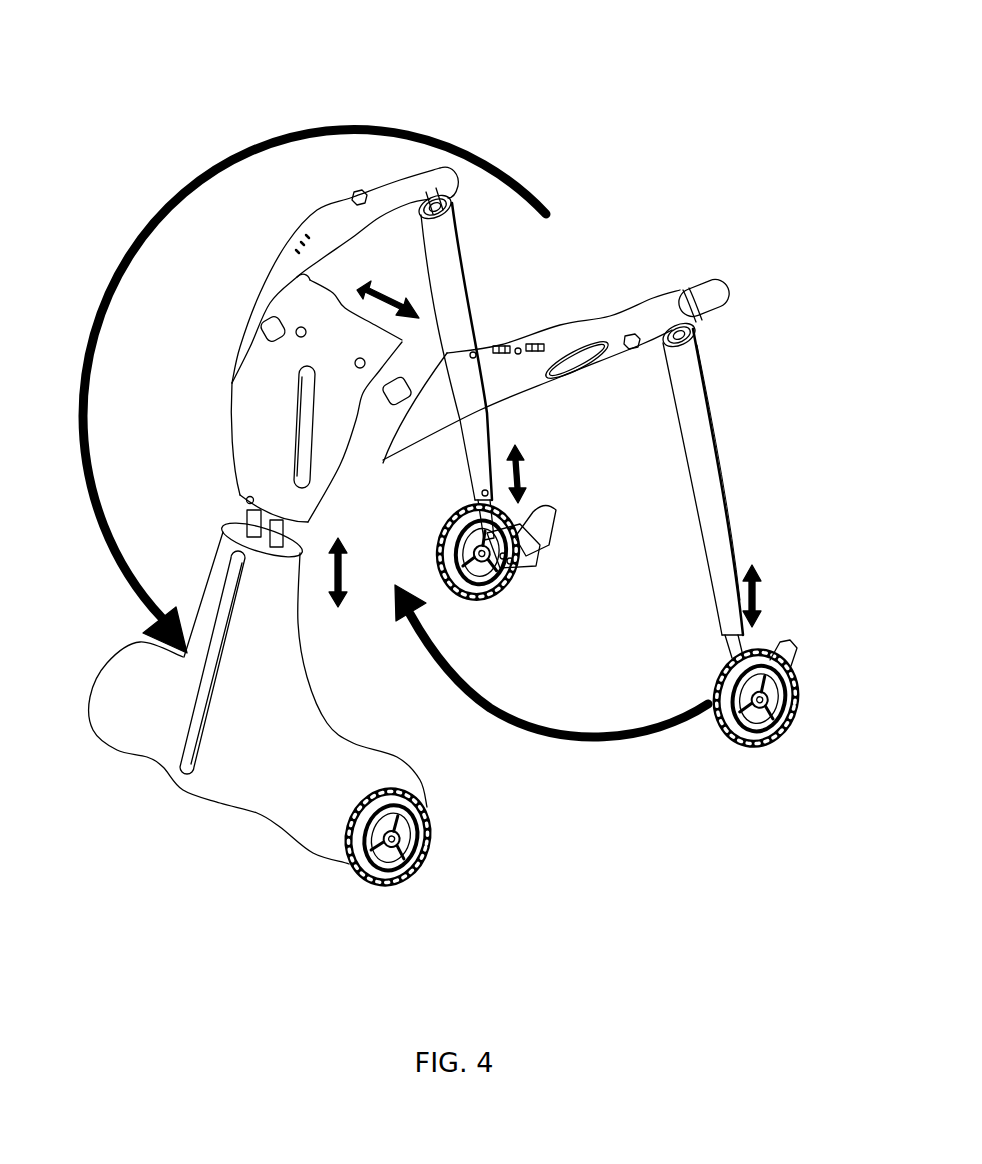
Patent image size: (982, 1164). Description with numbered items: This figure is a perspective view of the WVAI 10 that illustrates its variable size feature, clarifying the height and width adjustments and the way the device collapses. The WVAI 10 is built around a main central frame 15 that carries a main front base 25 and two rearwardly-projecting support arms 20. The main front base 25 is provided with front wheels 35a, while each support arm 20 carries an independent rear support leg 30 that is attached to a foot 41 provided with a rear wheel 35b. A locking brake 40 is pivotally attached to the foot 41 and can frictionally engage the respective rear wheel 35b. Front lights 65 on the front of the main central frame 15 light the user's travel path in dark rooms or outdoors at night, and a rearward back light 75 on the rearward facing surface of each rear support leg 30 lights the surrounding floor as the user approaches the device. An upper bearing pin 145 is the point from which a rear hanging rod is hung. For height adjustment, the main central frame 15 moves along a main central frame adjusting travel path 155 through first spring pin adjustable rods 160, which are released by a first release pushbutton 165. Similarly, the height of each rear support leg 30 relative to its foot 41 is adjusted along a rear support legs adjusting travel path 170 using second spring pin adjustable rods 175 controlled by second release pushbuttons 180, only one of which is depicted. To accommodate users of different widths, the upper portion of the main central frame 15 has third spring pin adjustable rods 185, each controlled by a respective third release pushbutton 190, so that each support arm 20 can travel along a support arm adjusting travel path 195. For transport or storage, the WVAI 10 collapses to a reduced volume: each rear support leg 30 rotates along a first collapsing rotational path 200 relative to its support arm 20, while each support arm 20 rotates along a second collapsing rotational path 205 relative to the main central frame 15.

The WVAI 10 is at (167, 147).
The main central frame 15 is at (243, 447).
The support arms 20 is at (412, 190).
The main front base 25 is at (278, 832).
The rear support leg 30 is at (458, 260).
The front wheels 35a is at (386, 880).
The rear wheel 35b is at (507, 581).
The locking brake 40 is at (545, 526).
The foot 41 is at (522, 556).
The front lights 65 is at (283, 445).
The rearward back light 75 is at (730, 490).
The upper bearing pin 145 is at (352, 198).
The main central frame adjusting travel path 155 is at (342, 558).
The first spring pin adjustable rods 160 is at (243, 527).
The first release pushbutton 165 is at (246, 500).
The rear support legs adjusting travel path 170 is at (530, 495).
The second spring pin adjustable rods 175 is at (488, 518).
The second release pushbuttons 180 is at (481, 491).
The third spring pin adjustable rods 185 is at (268, 328).
The third release pushbutton 190 is at (296, 335).
The support arm adjusting travel path 195 is at (396, 298).
The first collapsing rotational path 200 is at (560, 738).
The second collapsing rotational path 205 is at (292, 136).